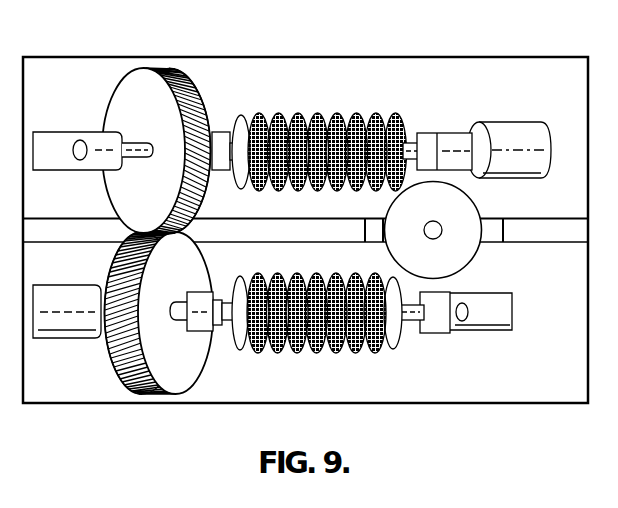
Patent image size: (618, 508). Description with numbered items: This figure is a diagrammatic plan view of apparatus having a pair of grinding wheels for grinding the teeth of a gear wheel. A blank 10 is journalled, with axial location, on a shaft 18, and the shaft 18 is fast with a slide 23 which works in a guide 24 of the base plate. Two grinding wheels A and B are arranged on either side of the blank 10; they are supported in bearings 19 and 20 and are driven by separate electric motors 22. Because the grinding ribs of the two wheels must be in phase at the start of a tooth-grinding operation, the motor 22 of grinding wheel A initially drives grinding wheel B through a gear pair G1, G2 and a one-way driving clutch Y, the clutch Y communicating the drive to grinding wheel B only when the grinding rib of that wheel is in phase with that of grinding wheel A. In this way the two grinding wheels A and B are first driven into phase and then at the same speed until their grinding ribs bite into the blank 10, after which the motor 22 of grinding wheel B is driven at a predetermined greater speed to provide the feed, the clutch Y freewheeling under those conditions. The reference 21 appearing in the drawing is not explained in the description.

The gear G1 is at (165, 392).
The gear G2 is at (166, 72).
The grinding wheel A is at (288, 342).
The grinding wheel B is at (326, 112).
The one-way driving clutch Y is at (220, 132).
The blank 10 is at (450, 240).
The shaft 18 is at (438, 226).
The bearing 19 is at (100, 138).
The bearing 20 is at (453, 138).
The brush unit 21 is at (319, 110).
The electric motor 22 is at (507, 135).
The slide 23 is at (372, 230).
The guide 24 is at (74, 230).